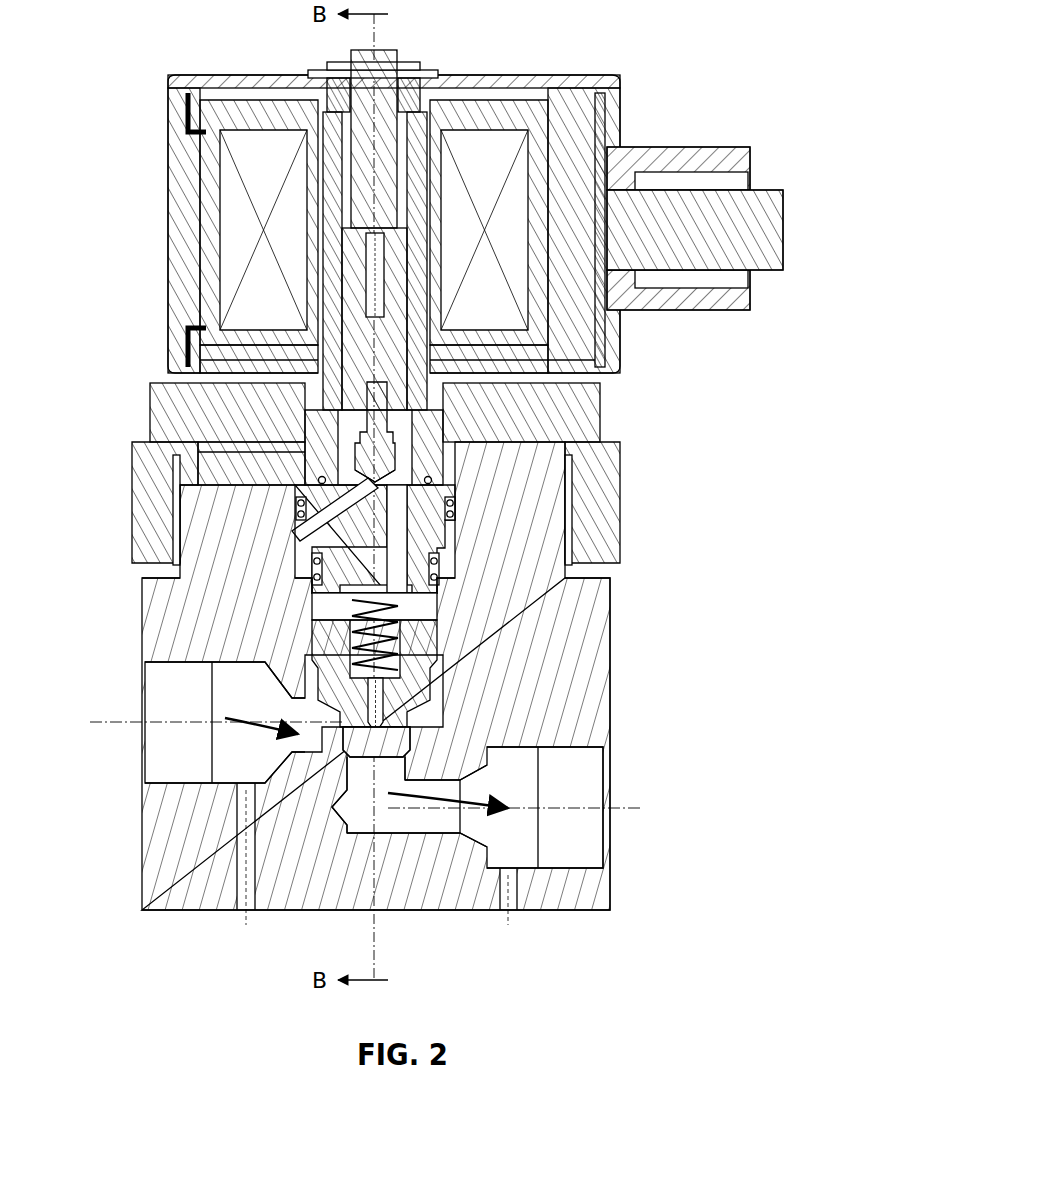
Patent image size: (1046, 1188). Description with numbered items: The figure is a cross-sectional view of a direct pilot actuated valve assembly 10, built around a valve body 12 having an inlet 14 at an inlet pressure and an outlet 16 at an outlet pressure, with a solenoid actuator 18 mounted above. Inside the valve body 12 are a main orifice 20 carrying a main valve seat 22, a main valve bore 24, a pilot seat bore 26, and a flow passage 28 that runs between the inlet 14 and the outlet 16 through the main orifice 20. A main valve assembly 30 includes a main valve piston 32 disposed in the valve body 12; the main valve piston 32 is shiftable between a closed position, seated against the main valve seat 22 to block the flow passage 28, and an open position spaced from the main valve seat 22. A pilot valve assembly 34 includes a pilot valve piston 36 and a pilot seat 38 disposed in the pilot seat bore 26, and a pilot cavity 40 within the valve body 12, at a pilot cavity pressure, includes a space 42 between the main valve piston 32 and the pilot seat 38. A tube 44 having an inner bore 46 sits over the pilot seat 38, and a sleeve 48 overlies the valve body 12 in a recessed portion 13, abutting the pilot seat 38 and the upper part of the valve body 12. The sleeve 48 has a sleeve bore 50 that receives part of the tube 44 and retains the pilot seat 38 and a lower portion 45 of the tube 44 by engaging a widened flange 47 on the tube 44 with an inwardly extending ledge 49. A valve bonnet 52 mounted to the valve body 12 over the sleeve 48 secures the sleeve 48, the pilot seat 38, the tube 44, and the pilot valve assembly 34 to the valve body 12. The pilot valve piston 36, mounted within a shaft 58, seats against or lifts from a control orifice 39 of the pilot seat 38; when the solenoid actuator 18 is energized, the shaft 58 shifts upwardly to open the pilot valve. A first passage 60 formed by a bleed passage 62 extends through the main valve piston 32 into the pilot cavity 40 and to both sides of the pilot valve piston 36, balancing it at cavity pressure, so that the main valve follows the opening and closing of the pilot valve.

The pilot actuated valve assembly 10 is at (760, 562).
The valve body 12 is at (612, 662).
The recessed portion 13 is at (300, 510).
The inlet 14 is at (160, 697).
The outlet 16 is at (580, 775).
The solenoid actuator 18 is at (505, 72).
The main orifice 20 is at (376, 735).
The main valve seat 22 is at (412, 763).
The main valve bore 24 is at (440, 662).
The pilot seat bore 26 is at (465, 530).
The flow passage 28 is at (389, 760).
The main valve assembly 30 is at (395, 610).
The main valve piston 32 is at (455, 705).
The pilot valve assembly 34 is at (398, 437).
The pilot valve piston 36 is at (470, 395).
The pilot seat 38 is at (335, 515).
The control orifice 39 is at (295, 500).
The pilot cavity 40 is at (450, 657).
The space 42 is at (420, 605).
The tube 44 is at (490, 368).
The lower portion of the tube 45 is at (440, 467).
The inner bore 46 is at (415, 265).
The widened flange 47 is at (318, 405).
The sleeve 48 is at (240, 393).
The inwardly extending ledge 49 is at (480, 380).
The sleeve bore 50 is at (260, 446).
The valve bonnet 52 is at (606, 420).
The shaft 58 is at (330, 283).
The first passage 60 is at (455, 548).
The bleed passage 62 is at (343, 763).